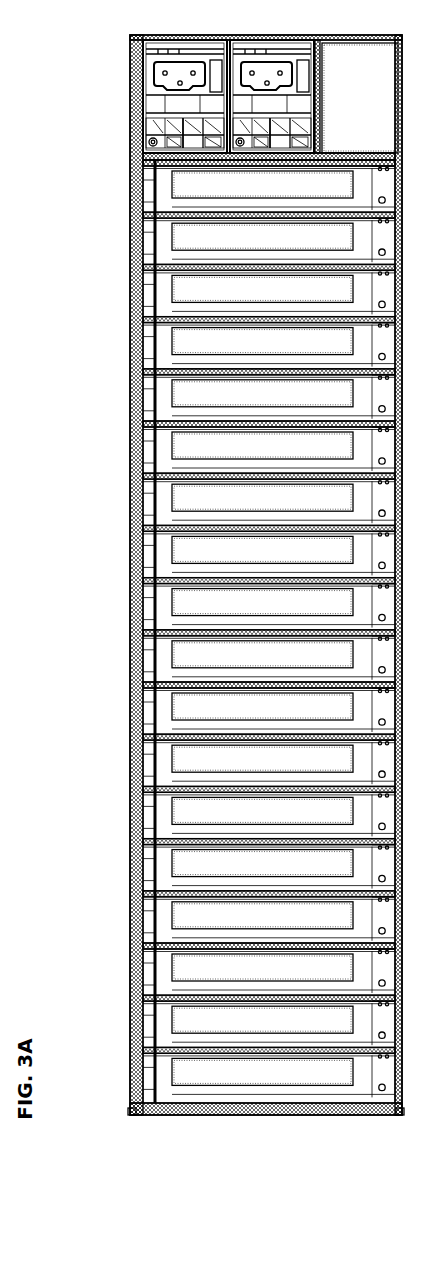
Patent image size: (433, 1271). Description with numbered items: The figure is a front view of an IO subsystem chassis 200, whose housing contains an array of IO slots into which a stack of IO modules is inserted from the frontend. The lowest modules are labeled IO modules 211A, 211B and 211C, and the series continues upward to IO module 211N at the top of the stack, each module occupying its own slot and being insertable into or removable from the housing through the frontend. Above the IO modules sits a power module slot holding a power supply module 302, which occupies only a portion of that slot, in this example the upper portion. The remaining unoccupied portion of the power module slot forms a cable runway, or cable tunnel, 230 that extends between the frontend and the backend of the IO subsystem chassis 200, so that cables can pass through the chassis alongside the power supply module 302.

The IO subsystem chassis 200 is at (212, 575).
The power supply module 302 is at (148, 110).
The cable runway 230 is at (360, 98).
The IO module 211N is at (166, 196).
The IO module 211C is at (173, 977).
The IO module 211B is at (167, 1017).
The IO module 211A is at (168, 1088).